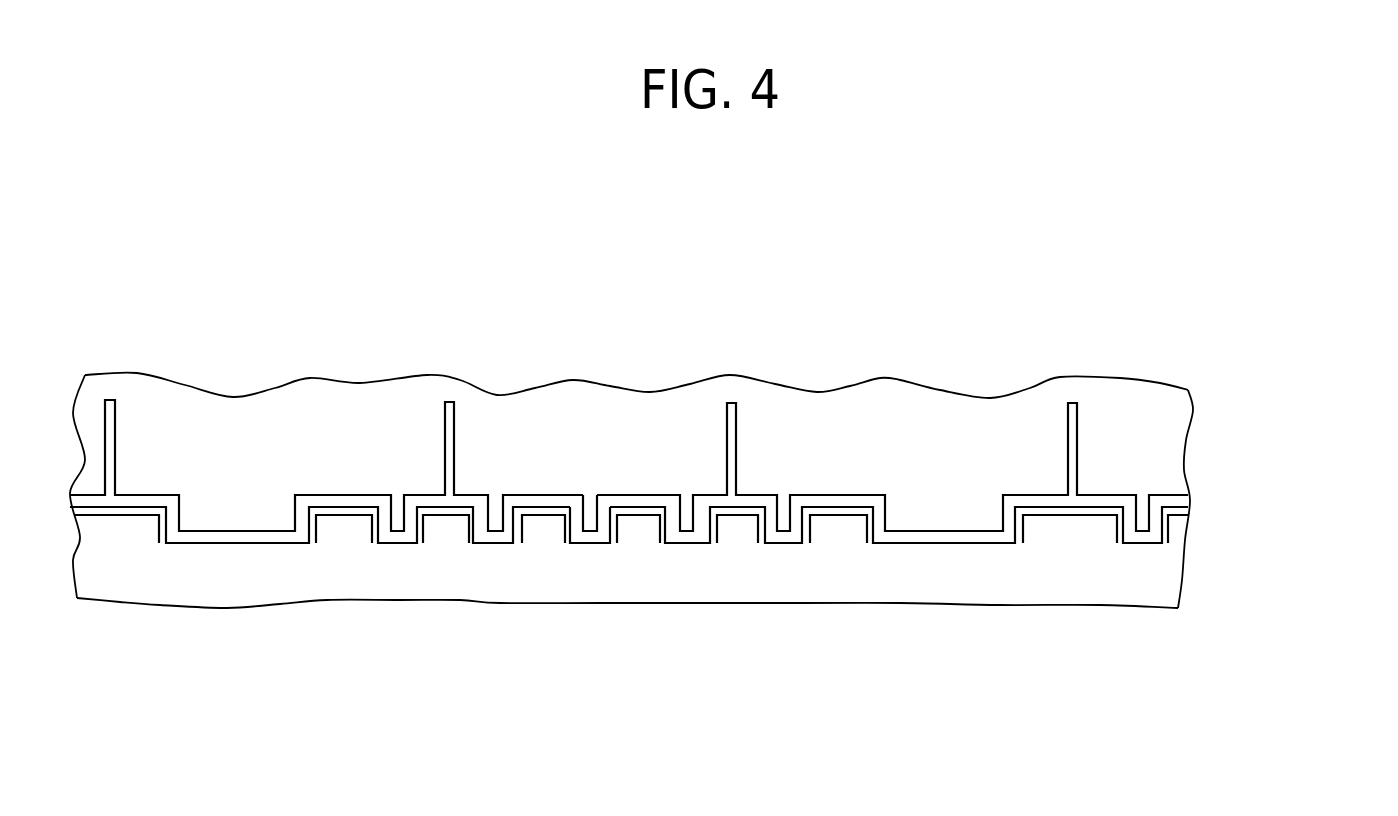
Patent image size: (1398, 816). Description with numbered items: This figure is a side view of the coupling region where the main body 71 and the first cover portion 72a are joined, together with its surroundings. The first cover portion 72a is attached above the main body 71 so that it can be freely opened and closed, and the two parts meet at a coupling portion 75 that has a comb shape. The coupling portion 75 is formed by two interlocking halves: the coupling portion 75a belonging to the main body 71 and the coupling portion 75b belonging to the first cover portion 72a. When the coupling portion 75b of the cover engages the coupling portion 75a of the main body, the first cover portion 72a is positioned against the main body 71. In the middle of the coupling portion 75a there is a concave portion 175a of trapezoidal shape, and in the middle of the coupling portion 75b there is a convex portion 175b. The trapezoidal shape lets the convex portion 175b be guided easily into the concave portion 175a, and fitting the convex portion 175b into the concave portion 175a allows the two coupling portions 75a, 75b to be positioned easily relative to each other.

The main body 71 is at (1199, 580).
The first cover portion 72a is at (1202, 438).
The coupling portion 75 is at (719, 509).
The coupling portion of the main body 75a is at (629, 622).
The coupling portion of the first cover portion 75b is at (629, 405).
The concave portion 175a is at (585, 572).
The convex portion 175b is at (592, 488).